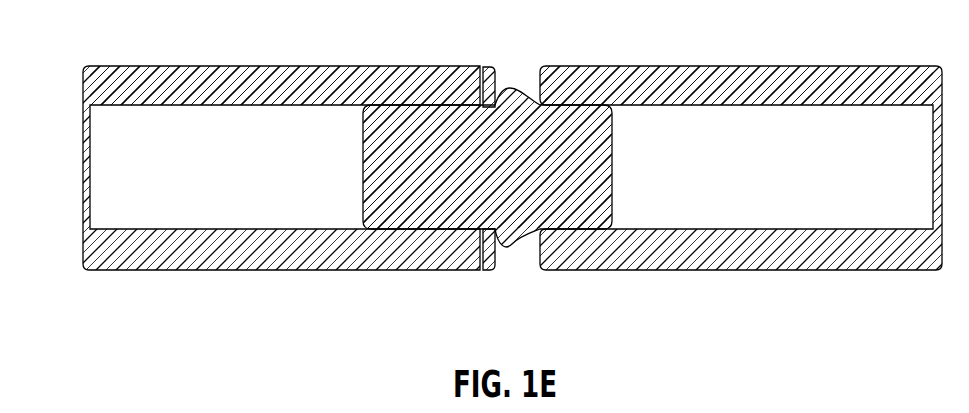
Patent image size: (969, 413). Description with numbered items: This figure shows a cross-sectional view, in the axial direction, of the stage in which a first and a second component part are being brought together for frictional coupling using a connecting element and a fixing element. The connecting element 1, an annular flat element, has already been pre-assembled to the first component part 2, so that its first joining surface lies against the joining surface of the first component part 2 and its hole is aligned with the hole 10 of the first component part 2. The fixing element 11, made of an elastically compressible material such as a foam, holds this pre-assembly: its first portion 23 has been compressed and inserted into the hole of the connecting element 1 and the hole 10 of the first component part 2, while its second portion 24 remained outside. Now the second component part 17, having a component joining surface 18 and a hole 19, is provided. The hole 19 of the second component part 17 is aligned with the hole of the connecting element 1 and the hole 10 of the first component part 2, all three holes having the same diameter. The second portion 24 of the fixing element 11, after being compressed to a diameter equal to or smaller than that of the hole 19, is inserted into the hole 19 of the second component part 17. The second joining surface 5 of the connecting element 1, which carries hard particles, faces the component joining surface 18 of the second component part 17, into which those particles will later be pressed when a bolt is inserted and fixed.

The connecting element 1 is at (490, 66).
The first component part 2 is at (157, 84).
The second joining surface 5 is at (500, 251).
The hole 10 is at (256, 141).
The fixing element 11 is at (491, 173).
The second component part 17 is at (862, 83).
The component joining surface 18 is at (541, 88).
The hole 19 is at (735, 161).
The first portion 23 is at (385, 214).
The second portion 24 is at (558, 218).